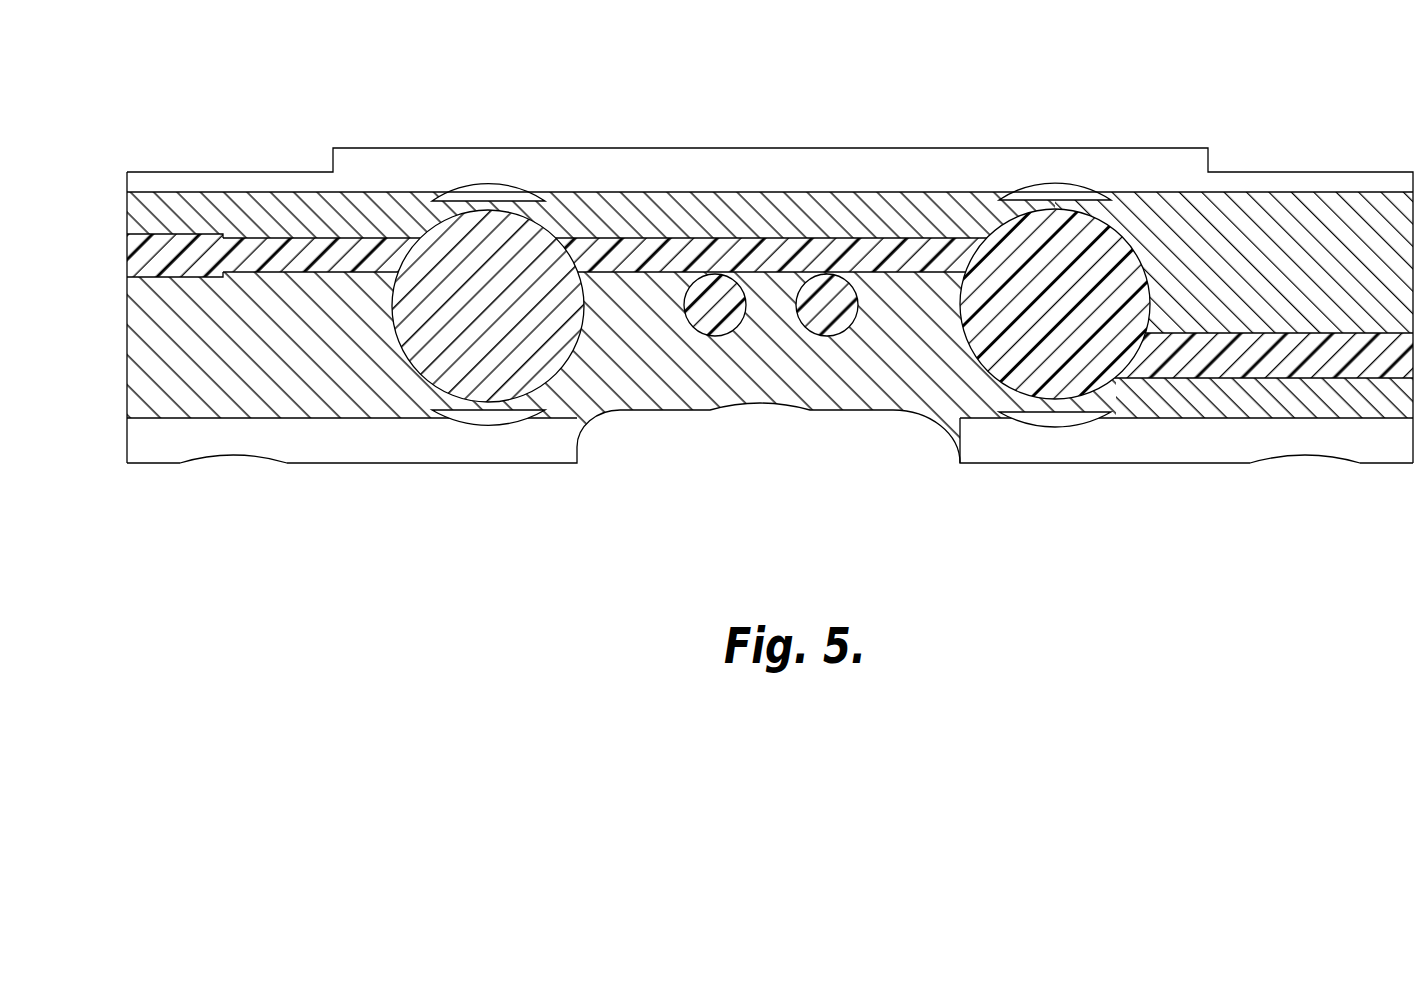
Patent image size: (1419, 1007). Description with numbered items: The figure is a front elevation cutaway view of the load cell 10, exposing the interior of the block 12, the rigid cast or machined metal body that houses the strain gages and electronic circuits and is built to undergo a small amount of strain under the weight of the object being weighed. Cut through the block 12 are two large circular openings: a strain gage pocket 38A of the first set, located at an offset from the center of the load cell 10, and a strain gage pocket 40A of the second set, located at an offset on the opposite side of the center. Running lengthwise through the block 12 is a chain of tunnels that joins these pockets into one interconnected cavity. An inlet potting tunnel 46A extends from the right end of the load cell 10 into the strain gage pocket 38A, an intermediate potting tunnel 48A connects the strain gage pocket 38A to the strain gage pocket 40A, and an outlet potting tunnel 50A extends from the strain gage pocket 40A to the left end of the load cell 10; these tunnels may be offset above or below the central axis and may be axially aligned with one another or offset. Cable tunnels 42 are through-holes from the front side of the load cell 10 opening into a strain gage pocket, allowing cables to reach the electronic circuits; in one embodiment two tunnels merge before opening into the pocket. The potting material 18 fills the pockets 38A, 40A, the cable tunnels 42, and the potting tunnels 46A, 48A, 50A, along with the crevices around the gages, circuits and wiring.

The load cell 10 is at (232, 121).
The block 12 is at (405, 160).
The potting material 18 is at (1097, 234).
The strain gage pocket 38A is at (972, 390).
The strain gage pocket 40A is at (568, 365).
The cable tunnels 42 is at (828, 310).
The inlet potting tunnel 46A is at (1313, 382).
The intermediate potting tunnel 48A is at (828, 236).
The outlet potting tunnel 50A is at (257, 277).